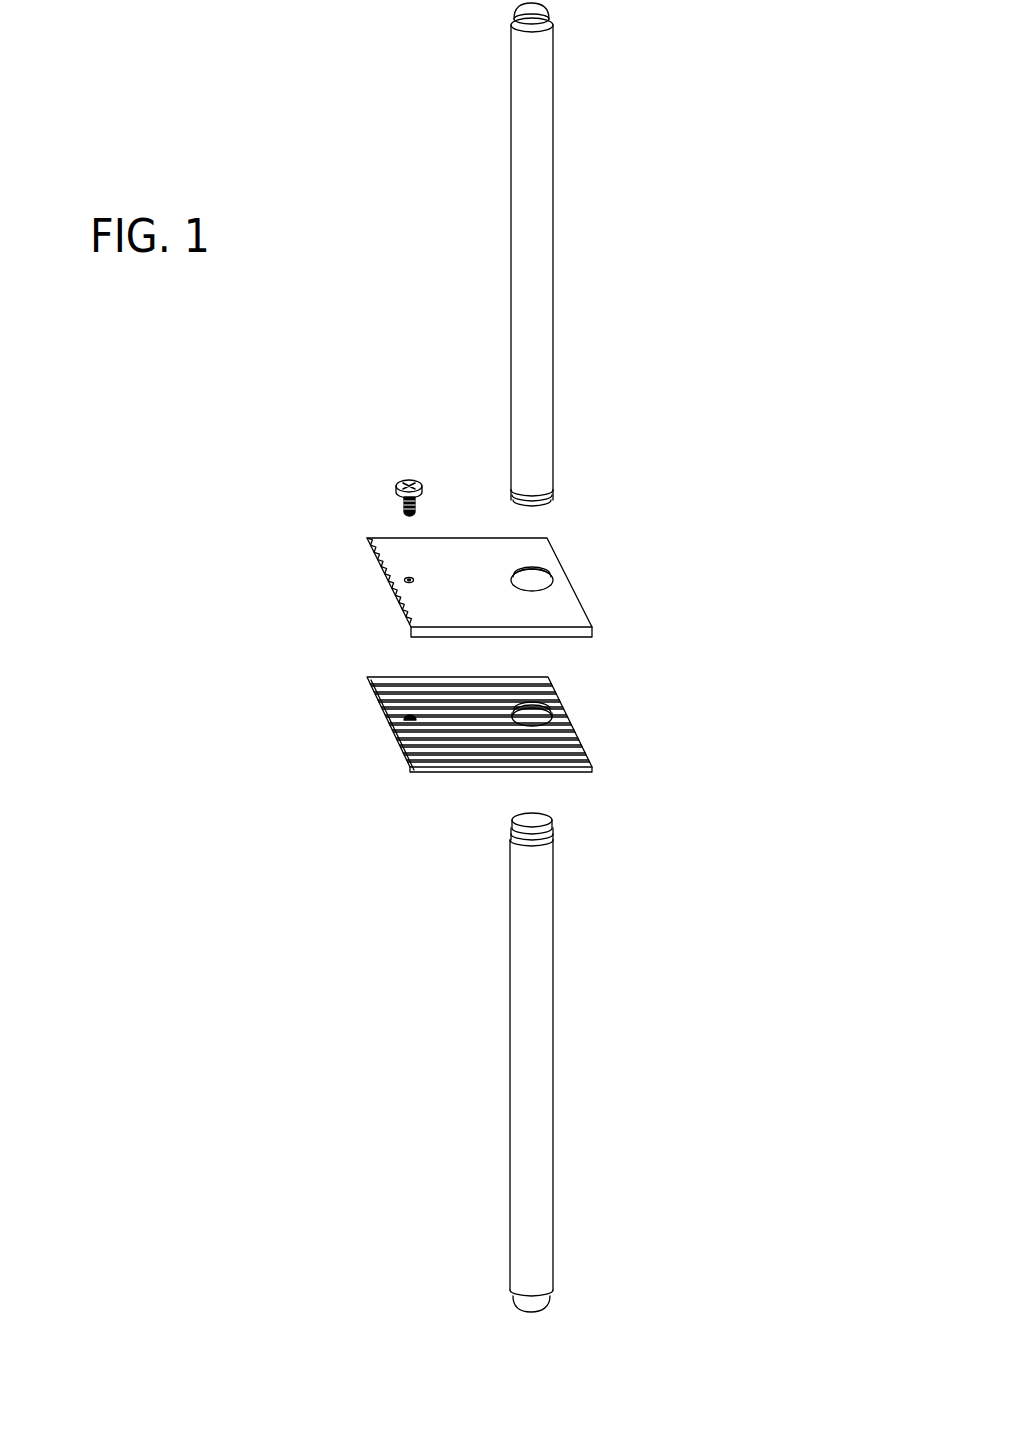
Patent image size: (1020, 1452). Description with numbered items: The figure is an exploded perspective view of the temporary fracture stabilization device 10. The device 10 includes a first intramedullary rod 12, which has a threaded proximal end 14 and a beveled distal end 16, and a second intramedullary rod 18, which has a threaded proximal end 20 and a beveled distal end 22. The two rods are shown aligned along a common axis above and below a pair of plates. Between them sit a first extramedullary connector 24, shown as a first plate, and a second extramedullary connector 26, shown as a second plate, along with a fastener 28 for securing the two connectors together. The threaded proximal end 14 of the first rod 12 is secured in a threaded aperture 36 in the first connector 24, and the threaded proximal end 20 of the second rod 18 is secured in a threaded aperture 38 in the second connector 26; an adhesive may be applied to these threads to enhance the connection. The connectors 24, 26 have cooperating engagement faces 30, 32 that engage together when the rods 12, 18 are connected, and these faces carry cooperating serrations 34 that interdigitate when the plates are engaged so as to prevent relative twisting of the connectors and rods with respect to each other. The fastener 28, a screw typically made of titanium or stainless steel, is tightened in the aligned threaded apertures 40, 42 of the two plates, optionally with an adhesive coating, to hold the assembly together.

The temporary fracture stabilization device 10 is at (652, 141).
The first intramedullary rod 12 is at (515, 243).
The threaded proximal end 14 is at (553, 491).
The beveled distal end 16 is at (512, 18).
The second intramedullary rod 18 is at (515, 1028).
The threaded proximal end 20 is at (552, 823).
The beveled distal end 22 is at (513, 1303).
The first extramedullary connector 24 is at (422, 609).
The second extramedullary connector 26 is at (579, 752).
The fastener 28 is at (400, 481).
The engagement face 30 is at (385, 582).
The engagement face 32 is at (433, 757).
The cooperating serrations 34 is at (535, 688).
The threaded aperture 36 is at (553, 577).
The threaded aperture 38 is at (552, 715).
The threaded aperture 40 is at (412, 577).
The threaded aperture 42 is at (410, 718).